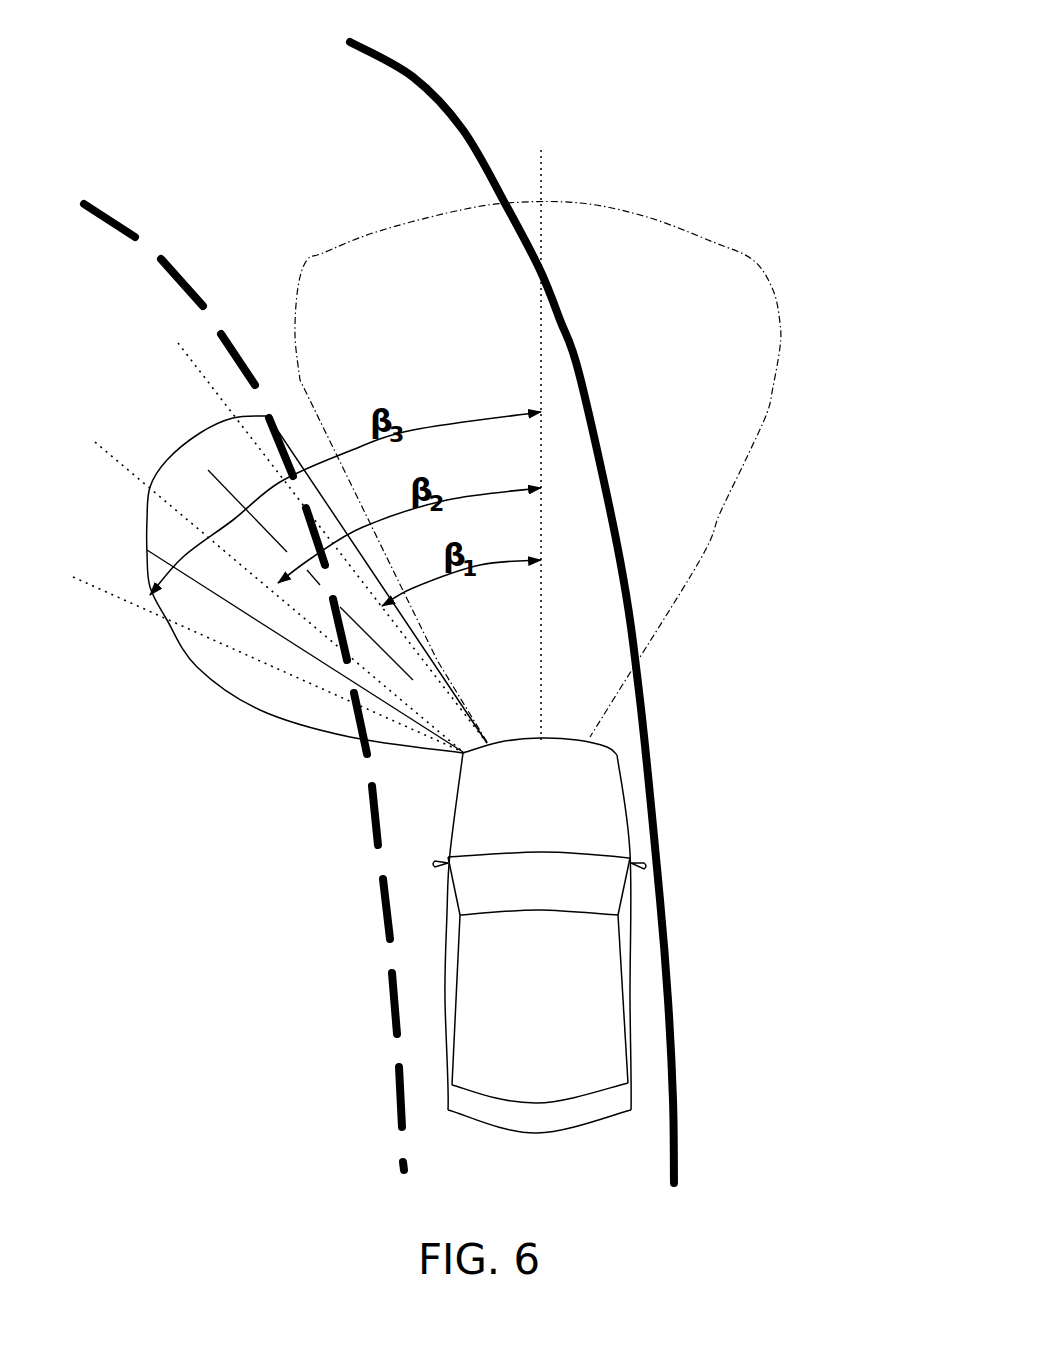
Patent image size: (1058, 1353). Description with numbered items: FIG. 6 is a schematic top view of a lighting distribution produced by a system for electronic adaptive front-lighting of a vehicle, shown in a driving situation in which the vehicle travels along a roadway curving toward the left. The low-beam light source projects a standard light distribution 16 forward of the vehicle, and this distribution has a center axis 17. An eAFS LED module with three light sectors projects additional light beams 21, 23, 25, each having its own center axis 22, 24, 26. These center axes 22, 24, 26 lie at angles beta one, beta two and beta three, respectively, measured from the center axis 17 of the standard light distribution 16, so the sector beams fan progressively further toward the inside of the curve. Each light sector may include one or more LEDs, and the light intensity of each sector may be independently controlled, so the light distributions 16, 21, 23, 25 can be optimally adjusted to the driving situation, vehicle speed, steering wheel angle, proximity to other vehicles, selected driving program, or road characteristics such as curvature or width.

The standard light distribution 16 is at (768, 417).
The center axis 17 is at (540, 421).
The light beam 21 is at (250, 412).
The center axis 22 is at (316, 522).
The light beam 23 is at (168, 460).
The center axis 24 is at (256, 582).
The light beam 25 is at (205, 675).
The center axis 26 is at (245, 647).